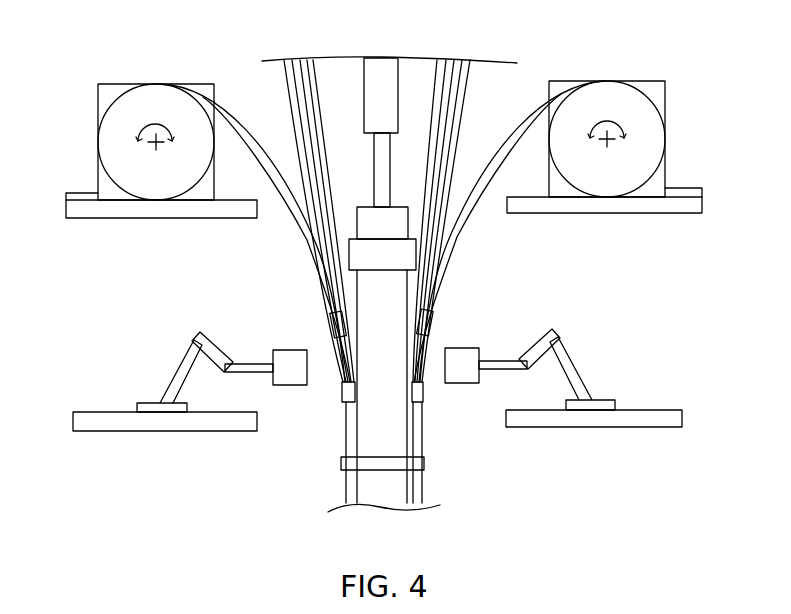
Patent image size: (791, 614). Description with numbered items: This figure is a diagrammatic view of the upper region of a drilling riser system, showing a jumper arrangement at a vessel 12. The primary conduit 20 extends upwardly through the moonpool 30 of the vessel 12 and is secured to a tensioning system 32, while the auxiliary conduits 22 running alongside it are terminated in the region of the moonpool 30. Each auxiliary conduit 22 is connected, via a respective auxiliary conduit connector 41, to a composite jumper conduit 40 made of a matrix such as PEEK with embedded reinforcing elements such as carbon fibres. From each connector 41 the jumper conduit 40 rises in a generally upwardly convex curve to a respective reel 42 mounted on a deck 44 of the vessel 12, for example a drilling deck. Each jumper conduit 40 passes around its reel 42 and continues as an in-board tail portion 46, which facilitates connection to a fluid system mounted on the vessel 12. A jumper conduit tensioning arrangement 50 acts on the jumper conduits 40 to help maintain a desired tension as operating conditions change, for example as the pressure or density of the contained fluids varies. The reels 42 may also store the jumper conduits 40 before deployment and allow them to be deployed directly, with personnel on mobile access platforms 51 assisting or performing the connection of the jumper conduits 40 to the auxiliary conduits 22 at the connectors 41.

The vessel 12 is at (672, 417).
The primary conduit 20 is at (392, 425).
The auxiliary conduits 22 is at (350, 473).
The moonpool 30 is at (487, 422).
The tensioning system 32 is at (402, 253).
The composite jumper conduit 40 is at (290, 205).
The auxiliary conduit connector 41 is at (343, 396).
The reels 42 is at (120, 92).
The deck 44 is at (100, 212).
The in-board tail portion 46 is at (85, 197).
The jumper conduit tensioning arrangement 50 is at (327, 317).
The mobile access platforms 51 is at (282, 362).